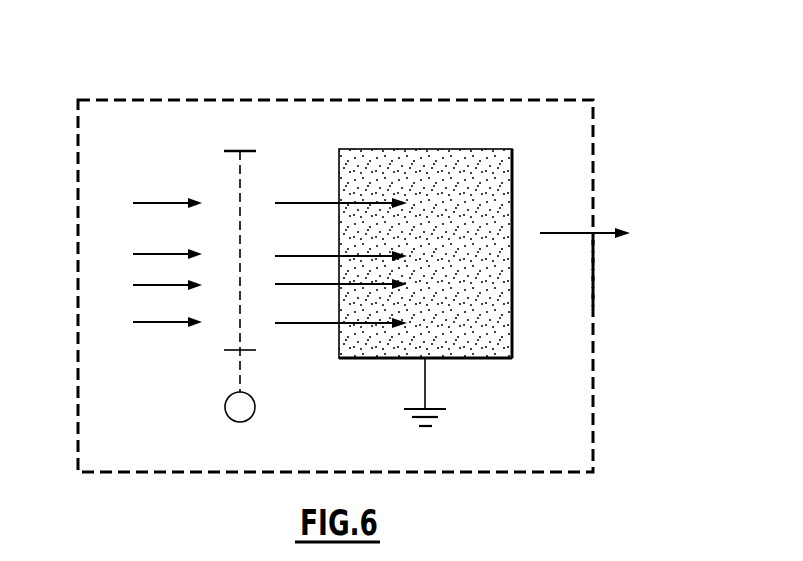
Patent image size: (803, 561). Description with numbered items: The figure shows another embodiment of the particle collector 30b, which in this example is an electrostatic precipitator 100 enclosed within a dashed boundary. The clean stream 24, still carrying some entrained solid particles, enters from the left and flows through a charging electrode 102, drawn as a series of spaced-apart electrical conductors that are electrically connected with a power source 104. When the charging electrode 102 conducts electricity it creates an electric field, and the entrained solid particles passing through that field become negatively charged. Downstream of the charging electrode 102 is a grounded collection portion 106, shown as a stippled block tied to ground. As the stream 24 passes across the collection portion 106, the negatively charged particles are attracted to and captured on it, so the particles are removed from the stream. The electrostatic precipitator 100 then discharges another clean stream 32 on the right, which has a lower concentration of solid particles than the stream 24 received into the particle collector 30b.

The particle collector 30b is at (660, 75).
The clean stream 24 is at (124, 270).
The charging electrode 102 is at (214, 349).
The power source 104 is at (255, 412).
The grounded collection portion 106 is at (512, 340).
The clean stream 32 is at (570, 233).
The electrostatic precipitator 100 is at (608, 270).